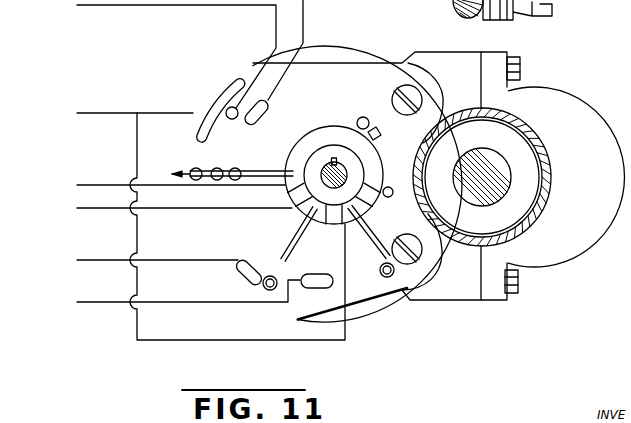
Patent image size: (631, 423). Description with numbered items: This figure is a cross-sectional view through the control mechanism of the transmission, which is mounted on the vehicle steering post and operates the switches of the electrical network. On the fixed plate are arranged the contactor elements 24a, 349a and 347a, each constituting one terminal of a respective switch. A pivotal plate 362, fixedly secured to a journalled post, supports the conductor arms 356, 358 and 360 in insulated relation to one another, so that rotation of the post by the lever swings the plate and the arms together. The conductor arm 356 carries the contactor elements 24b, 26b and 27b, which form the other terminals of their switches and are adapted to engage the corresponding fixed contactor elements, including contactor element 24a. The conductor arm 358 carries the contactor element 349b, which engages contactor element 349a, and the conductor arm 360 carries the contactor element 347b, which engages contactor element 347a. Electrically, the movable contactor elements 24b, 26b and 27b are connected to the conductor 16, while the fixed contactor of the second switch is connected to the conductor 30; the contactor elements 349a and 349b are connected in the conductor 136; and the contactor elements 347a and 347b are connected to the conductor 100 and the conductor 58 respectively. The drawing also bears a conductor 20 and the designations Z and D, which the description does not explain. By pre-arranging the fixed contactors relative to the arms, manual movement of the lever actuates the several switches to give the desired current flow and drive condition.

The conductor 30 is at (92, 7).
The conductor 20 is at (97, 113).
The contactor element 24a is at (228, 93).
The contactor element 24b is at (240, 112).
The contactor element 26b is at (218, 168).
The contactor element 27b is at (244, 168).
The direction arrow Z is at (225, 176).
The dial plate edge D is at (188, 136).
The conductor 16 is at (97, 185).
The conductor 136 is at (97, 210).
The conductor 100 is at (97, 303).
The conductor 58 is at (243, 342).
The conductor arm 356 is at (279, 150).
The pivotal plate 362 is at (345, 120).
The conductor arm 358 is at (298, 243).
The conductor arm 360 is at (367, 230).
The contactor element 349a is at (243, 272).
The contactor element 349b is at (270, 276).
The contactor element 347a is at (325, 290).
The contactor element 347b is at (386, 278).